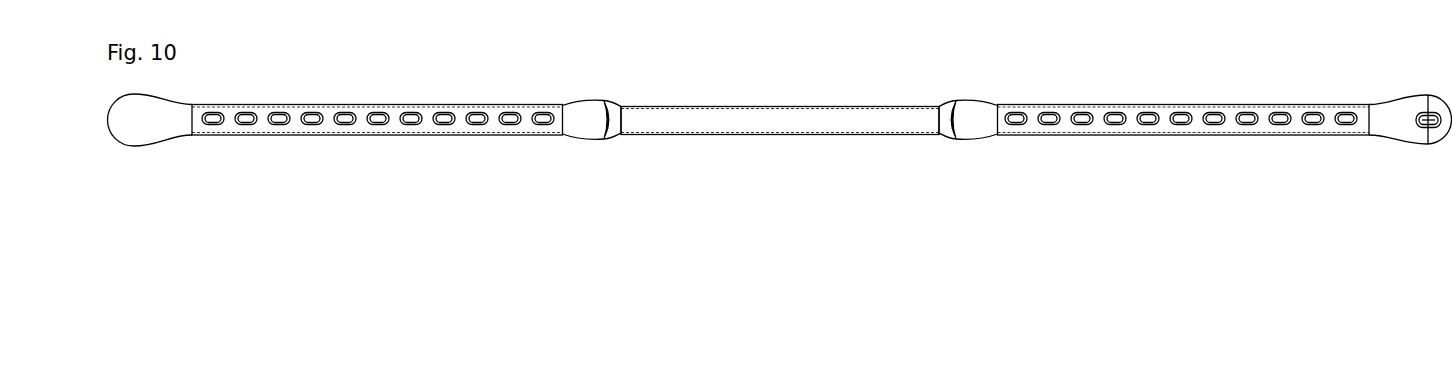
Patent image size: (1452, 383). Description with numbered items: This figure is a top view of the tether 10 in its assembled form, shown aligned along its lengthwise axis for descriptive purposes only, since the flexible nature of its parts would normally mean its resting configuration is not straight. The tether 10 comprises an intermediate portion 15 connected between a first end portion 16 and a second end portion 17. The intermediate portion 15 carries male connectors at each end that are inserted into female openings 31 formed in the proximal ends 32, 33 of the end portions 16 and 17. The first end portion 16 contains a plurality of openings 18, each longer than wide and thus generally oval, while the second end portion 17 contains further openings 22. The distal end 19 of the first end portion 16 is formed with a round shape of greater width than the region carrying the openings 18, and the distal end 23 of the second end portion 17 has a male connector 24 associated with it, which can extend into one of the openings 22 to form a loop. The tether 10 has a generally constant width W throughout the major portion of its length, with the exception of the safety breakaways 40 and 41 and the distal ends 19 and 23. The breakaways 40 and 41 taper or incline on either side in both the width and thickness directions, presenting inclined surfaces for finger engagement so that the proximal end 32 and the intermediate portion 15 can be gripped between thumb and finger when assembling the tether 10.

The tether 10 is at (677, 66).
The intermediate portion 15 is at (792, 118).
The first end portion 16 is at (358, 103).
The second end portion 17 is at (1197, 105).
The openings 18 is at (445, 126).
The distal end 19 is at (135, 137).
The openings 22 is at (1247, 126).
The distal end 23 is at (1423, 102).
The male connector 24 is at (1422, 130).
The female openings 31 is at (612, 123).
The proximal end 32 is at (582, 108).
The proximal end 33 is at (982, 123).
The safety breakaway 40 is at (596, 101).
The safety breakaway 41 is at (978, 104).
The width W is at (876, 62).